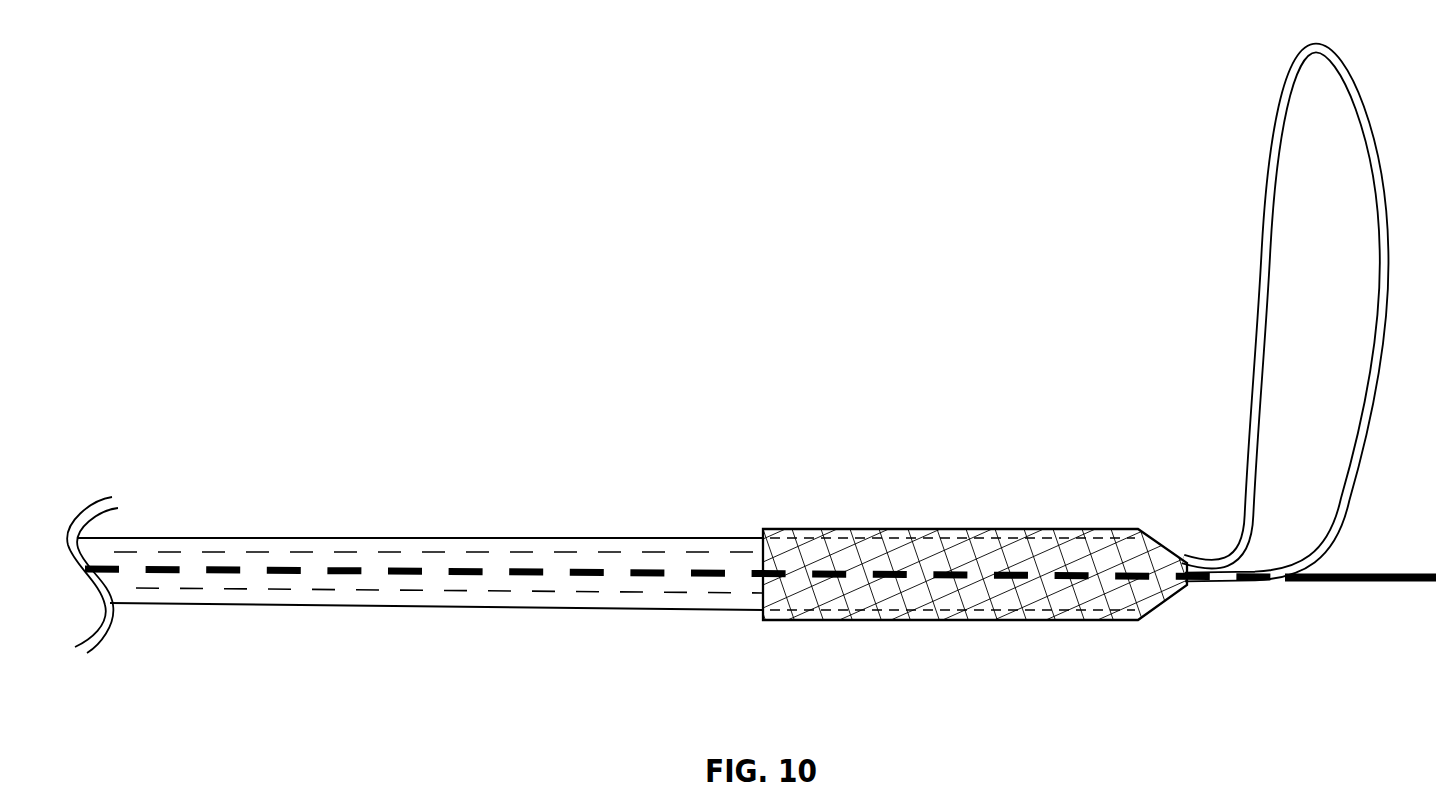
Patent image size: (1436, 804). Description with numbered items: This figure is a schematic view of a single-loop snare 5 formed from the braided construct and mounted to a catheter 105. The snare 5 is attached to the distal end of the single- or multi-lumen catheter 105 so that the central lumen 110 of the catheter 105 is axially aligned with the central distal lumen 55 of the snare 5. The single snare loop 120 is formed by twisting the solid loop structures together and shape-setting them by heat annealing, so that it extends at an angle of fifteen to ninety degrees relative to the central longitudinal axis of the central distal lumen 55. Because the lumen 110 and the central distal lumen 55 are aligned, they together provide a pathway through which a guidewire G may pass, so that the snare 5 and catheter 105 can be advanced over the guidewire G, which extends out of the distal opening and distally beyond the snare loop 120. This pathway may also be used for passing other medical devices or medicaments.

The snare 5 is at (850, 138).
The catheter 105 is at (609, 525).
The central lumen 110 is at (380, 584).
The central distal lumen 55 is at (1007, 617).
The single snare loop 120 is at (1246, 262).
The guidewire G is at (1374, 596).